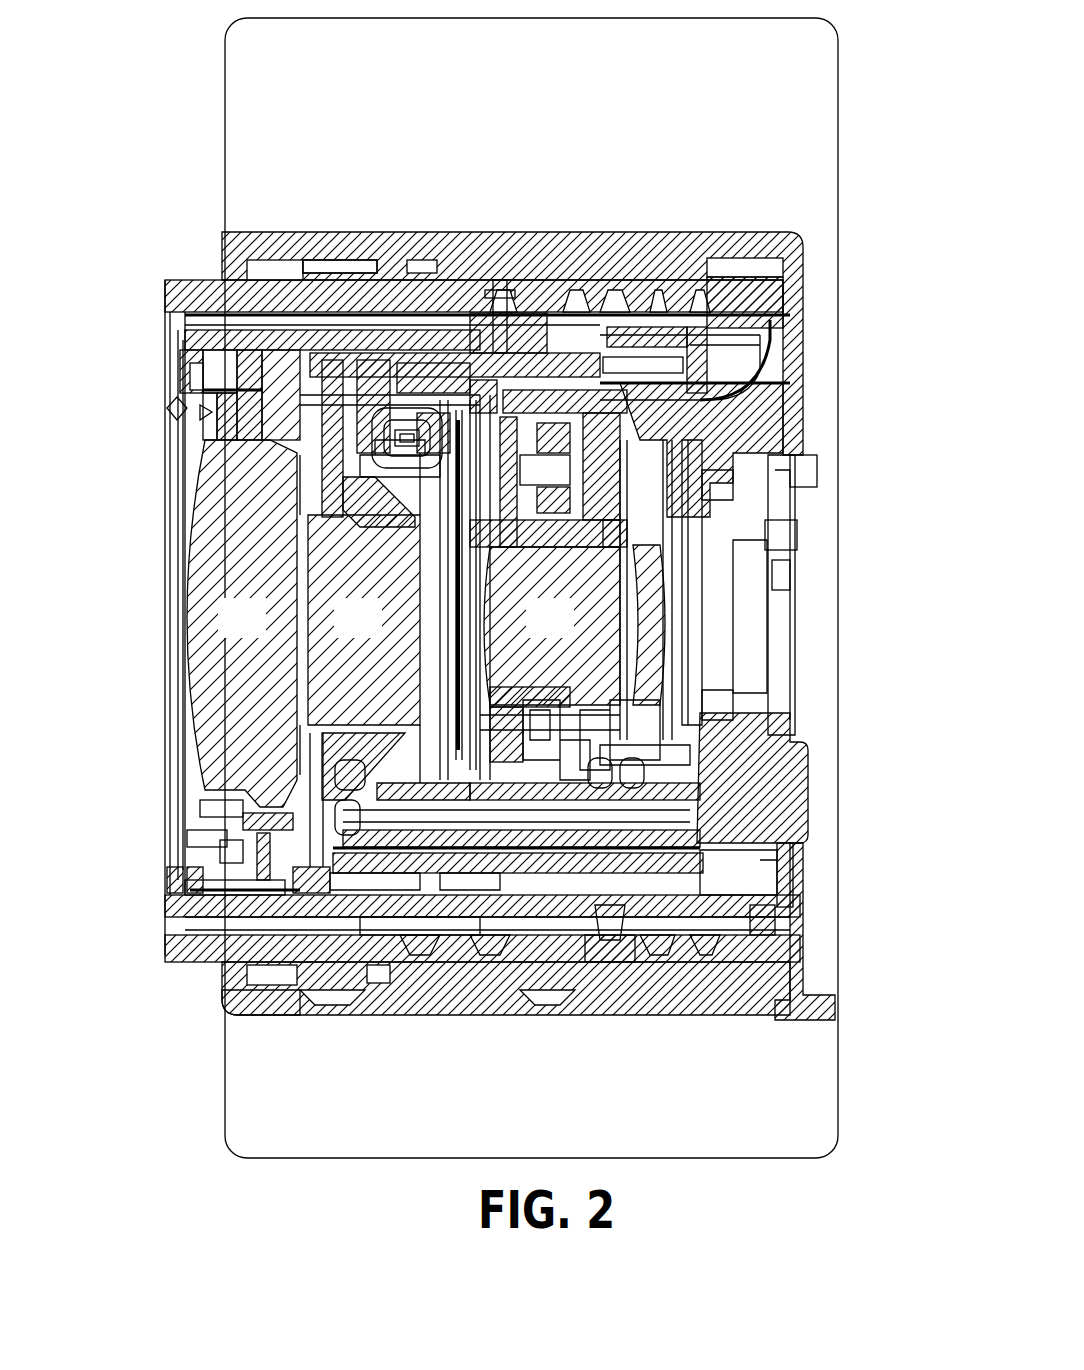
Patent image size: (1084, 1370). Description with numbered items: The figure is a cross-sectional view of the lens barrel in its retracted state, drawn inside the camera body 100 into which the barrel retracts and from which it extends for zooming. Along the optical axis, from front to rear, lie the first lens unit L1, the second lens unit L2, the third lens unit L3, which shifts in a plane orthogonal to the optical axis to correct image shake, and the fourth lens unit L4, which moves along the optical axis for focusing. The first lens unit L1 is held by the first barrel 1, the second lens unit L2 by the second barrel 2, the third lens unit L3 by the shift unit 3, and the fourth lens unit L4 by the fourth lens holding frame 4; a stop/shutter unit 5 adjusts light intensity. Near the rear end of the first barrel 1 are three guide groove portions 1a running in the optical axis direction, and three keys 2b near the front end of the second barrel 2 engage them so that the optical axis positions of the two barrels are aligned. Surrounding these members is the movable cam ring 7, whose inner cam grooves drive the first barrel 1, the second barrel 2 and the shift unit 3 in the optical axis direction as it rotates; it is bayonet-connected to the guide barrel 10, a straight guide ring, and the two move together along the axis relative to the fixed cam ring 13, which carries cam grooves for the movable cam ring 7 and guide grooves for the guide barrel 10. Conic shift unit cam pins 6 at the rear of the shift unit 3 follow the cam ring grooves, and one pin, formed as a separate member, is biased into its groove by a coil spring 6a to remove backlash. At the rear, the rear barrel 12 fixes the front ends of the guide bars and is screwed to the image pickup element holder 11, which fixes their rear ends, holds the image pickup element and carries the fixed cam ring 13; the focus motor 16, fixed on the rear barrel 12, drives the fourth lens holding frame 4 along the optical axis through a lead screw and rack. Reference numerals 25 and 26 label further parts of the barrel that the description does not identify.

The camera body 100 is at (838, 134).
The first barrel 1 is at (188, 328).
The guide groove portions 1a is at (398, 925).
The second barrel 2 is at (282, 233).
The keys 2b is at (220, 968).
The shift unit 3 is at (560, 320).
The fourth lens holding frame 4 is at (765, 540).
The stop/shutter unit 5 is at (447, 395).
The shift unit cam pin 6 is at (607, 935).
The coil spring 6a is at (660, 958).
The movable cam ring 7 is at (182, 292).
The guide barrel 10 is at (190, 928).
The image pickup element holder 11 is at (805, 962).
The rear barrel 12 is at (760, 420).
The fixed cam ring 13 is at (345, 232).
The focus motor 16 is at (805, 778).
The guide member 25 is at (500, 283).
The rotating ring 26 is at (575, 350).
The first lens unit L1 is at (242, 623).
The second lens unit L2 is at (364, 620).
The third lens unit L3 is at (552, 626).
The fourth lens unit L4 is at (651, 625).